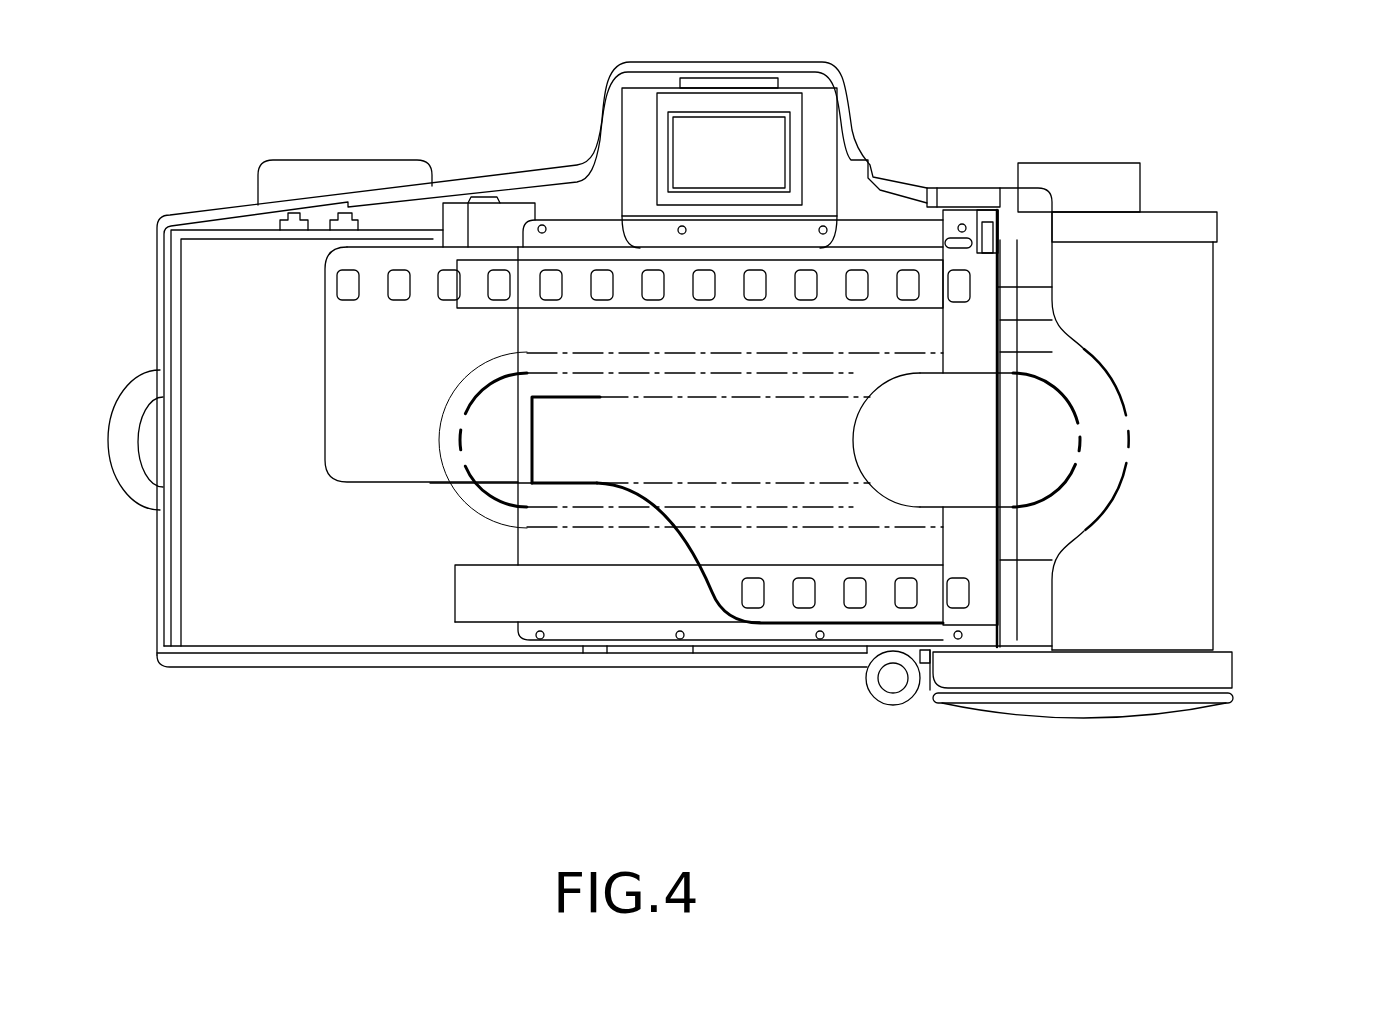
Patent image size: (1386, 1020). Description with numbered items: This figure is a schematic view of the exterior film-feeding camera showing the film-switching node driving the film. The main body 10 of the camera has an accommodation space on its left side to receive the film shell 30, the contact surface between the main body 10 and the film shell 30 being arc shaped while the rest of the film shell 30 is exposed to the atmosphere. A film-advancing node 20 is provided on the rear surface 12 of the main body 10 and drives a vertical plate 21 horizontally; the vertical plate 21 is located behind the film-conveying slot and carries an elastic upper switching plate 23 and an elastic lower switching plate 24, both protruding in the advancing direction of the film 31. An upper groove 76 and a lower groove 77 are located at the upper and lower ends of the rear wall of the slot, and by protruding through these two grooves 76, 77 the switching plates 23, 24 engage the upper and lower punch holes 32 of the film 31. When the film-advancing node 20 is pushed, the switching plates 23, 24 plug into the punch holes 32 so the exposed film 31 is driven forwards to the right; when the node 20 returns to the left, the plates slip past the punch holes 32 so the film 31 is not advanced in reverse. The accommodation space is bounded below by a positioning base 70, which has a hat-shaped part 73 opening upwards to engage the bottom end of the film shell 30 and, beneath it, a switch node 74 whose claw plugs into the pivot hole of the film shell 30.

The main body 10 is at (295, 693).
The rear surface 12 is at (1087, 500).
The film-advancing node 20 is at (1043, 413).
The vertical plate 21 is at (988, 288).
The elastic upper switching plate 23 is at (957, 285).
The elastic lower switching plate 24 is at (958, 606).
The film shell 30 is at (1190, 483).
The film 31 is at (340, 408).
The punch holes 32 is at (398, 283).
The positioning base 70 is at (1145, 764).
The hat-shaped part 73 is at (1173, 672).
The switch node 74 is at (1083, 718).
The upper groove 76 is at (467, 297).
The lower groove 77 is at (660, 608).